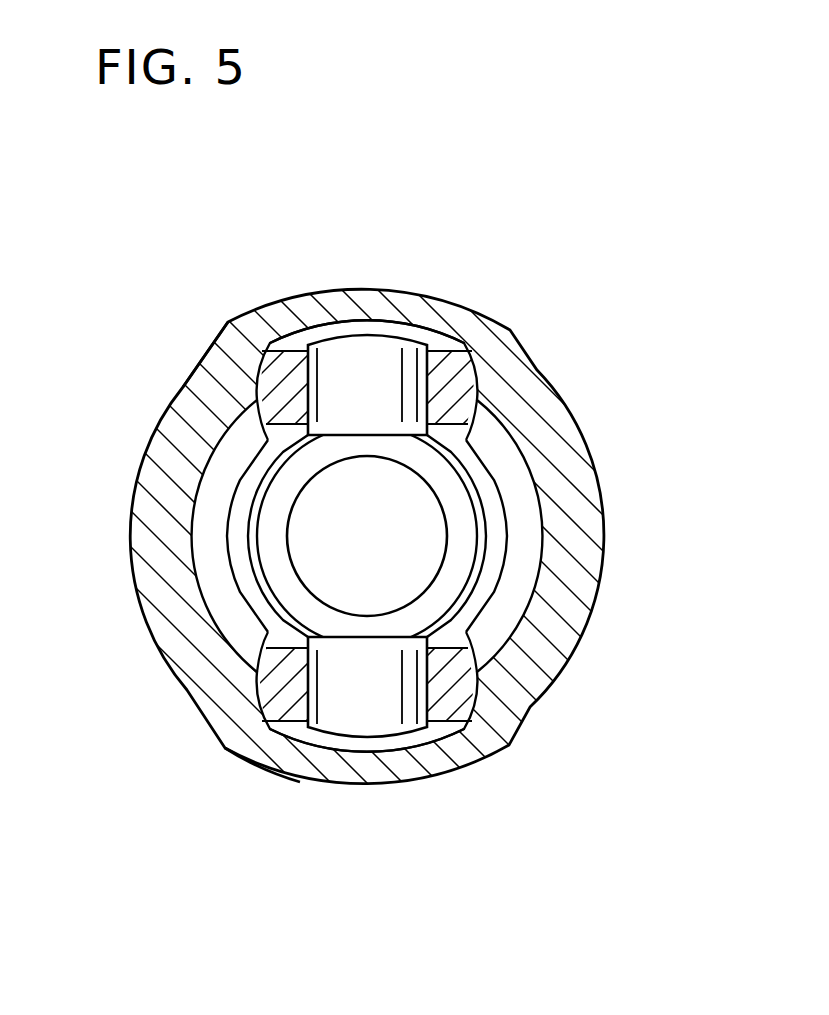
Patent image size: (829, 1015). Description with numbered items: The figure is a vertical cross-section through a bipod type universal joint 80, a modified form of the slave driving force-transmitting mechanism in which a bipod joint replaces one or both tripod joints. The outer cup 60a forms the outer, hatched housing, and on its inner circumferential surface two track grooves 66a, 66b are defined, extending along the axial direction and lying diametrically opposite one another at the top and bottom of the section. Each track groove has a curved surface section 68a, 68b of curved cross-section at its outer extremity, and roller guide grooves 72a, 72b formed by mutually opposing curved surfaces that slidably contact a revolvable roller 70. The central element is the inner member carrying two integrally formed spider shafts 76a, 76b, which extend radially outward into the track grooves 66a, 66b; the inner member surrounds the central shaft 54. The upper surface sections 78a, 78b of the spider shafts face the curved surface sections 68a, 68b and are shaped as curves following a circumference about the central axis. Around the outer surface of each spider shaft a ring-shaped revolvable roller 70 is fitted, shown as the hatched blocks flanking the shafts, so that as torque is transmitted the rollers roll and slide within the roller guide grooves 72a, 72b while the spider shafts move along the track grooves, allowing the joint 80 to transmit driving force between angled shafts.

The shaft 54 is at (270, 535).
The outer cup 60a is at (598, 520).
The track groove 66a is at (372, 323).
The track groove 66b is at (440, 738).
The curved surface section 68a is at (302, 333).
The curved surface section 68b is at (325, 748).
The revolvable roller 70 is at (457, 370).
The roller guide groove 72a is at (230, 328).
The roller guide groove 72b is at (268, 765).
The spider shaft 76a is at (357, 365).
The spider shaft 76b is at (393, 713).
The upper surface section 78a is at (405, 332).
The upper surface section 78b is at (375, 745).
The bipod type universal joint 80 is at (617, 314).